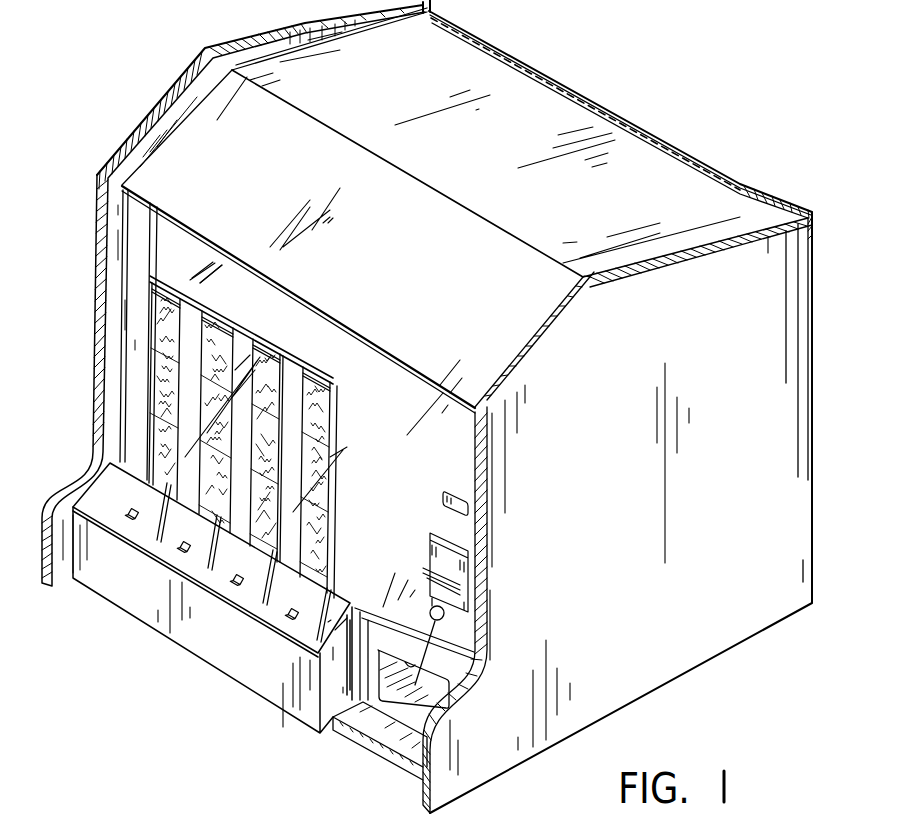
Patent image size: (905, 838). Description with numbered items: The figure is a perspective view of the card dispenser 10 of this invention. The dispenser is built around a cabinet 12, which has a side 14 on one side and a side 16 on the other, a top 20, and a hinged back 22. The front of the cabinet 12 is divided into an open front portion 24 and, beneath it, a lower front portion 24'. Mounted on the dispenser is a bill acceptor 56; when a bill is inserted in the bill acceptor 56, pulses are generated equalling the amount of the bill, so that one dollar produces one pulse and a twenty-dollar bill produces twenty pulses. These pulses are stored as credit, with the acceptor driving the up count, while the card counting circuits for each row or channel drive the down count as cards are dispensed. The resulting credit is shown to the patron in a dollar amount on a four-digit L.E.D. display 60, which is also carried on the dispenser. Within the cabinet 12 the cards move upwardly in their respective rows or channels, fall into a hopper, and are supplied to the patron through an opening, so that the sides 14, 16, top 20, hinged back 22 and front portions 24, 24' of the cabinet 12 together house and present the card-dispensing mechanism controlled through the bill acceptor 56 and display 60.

The card dispenser 10 is at (705, 107).
The cabinet 12 is at (744, 359).
The side 14 is at (173, 100).
The side 16 is at (624, 365).
The top 20 is at (453, 167).
The hinged back 22 is at (723, 183).
The open front portion 24 is at (232, 384).
The lower front portion 24' is at (212, 603).
The bill acceptor 56 is at (427, 563).
The four-digit L.E.D. display 60 is at (443, 495).